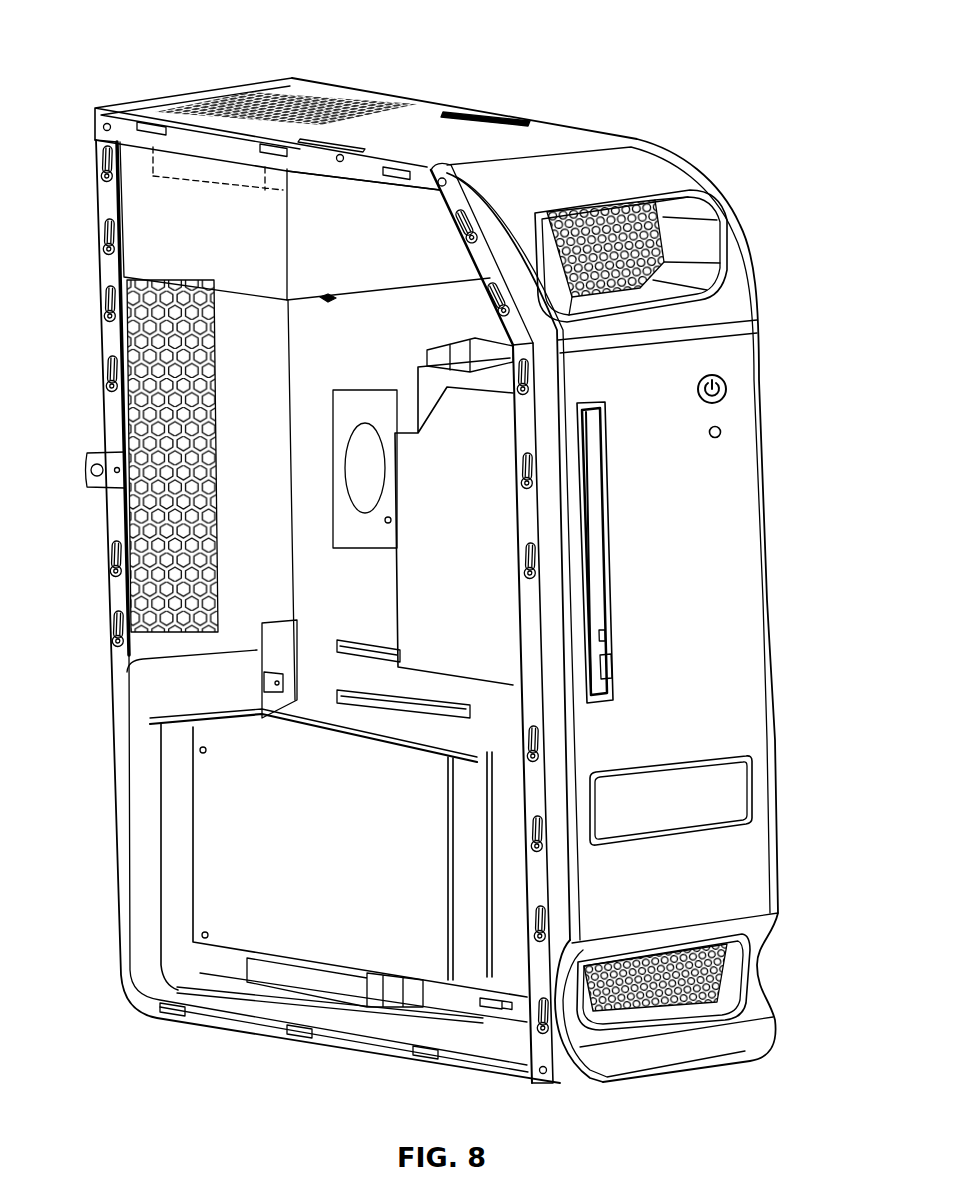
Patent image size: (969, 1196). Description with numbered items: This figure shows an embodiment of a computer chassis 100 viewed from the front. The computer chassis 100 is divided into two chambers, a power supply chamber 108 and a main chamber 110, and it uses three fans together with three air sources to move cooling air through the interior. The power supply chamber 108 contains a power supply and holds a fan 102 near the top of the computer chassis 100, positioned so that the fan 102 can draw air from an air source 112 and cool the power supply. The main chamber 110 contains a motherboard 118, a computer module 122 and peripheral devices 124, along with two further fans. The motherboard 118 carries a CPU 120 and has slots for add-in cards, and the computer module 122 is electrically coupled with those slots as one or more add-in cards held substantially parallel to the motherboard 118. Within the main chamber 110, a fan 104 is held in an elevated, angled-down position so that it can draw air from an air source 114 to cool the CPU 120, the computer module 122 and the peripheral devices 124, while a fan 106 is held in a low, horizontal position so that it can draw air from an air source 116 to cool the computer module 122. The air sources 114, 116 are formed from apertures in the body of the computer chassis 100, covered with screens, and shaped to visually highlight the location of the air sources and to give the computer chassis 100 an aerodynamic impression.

The computer chassis 100 is at (188, 52).
The fan 102 is at (180, 170).
The fan 104 is at (630, 207).
The fan 106 is at (667, 1012).
The power supply chamber 108 is at (363, 198).
The main chamber 110 is at (473, 278).
The air source 112 is at (328, 93).
The air source 114 is at (690, 272).
The air source 116 is at (740, 982).
The motherboard 118 is at (341, 342).
The CPU 120 is at (382, 390).
The computer module 122 is at (336, 858).
The peripheral devices 124 is at (480, 556).